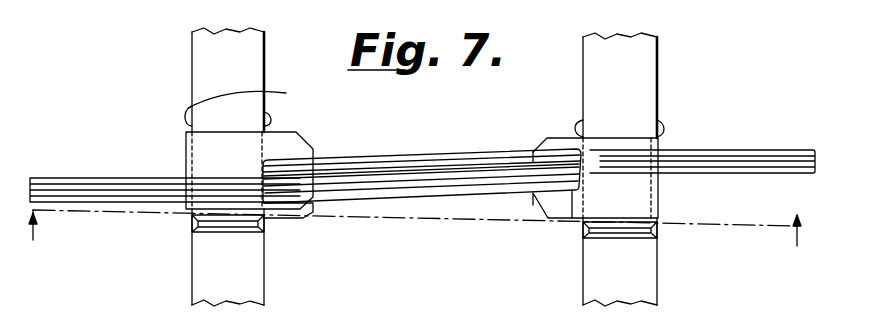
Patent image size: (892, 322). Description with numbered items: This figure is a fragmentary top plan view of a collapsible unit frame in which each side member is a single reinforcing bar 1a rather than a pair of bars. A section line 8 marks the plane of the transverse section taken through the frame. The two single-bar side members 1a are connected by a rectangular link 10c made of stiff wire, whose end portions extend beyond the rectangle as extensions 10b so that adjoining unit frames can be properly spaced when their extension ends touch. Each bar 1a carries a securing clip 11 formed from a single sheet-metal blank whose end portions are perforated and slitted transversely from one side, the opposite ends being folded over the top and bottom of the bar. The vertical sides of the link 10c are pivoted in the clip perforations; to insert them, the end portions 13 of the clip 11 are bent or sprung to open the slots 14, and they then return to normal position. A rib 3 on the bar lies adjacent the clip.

The single-bar side member 1a is at (703, 84).
The rib 3 is at (270, 122).
The crimped or grooved portion 8 is at (423, 236).
The extensions 10b is at (53, 182).
The rectangular link 10c is at (440, 134).
The securing clip 11 is at (190, 146).
The end portions 13 is at (298, 150).
The slots 14 is at (273, 217).